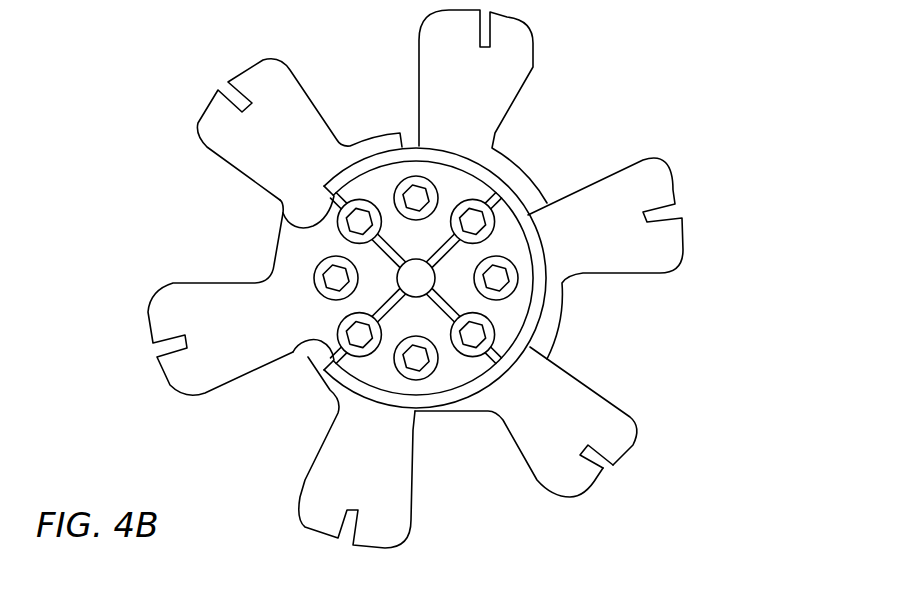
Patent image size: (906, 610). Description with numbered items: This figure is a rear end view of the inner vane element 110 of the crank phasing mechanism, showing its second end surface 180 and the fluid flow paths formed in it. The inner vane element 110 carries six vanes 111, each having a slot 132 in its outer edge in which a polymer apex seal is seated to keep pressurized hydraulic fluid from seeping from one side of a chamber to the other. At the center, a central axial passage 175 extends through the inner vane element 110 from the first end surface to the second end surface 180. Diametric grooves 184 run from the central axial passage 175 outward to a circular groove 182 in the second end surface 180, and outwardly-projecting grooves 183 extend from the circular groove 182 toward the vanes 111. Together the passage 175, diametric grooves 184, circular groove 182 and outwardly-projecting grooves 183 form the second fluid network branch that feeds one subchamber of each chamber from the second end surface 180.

The inner vane element 110 is at (636, 125).
The vane 111 is at (578, 498).
The slot 132 is at (600, 465).
The central axial passage 175 is at (405, 272).
The second end surface 180 is at (577, 247).
The circular groove 182 is at (340, 378).
The outwardly-projecting groove 183 is at (293, 355).
The diametric groove 184 is at (443, 237).